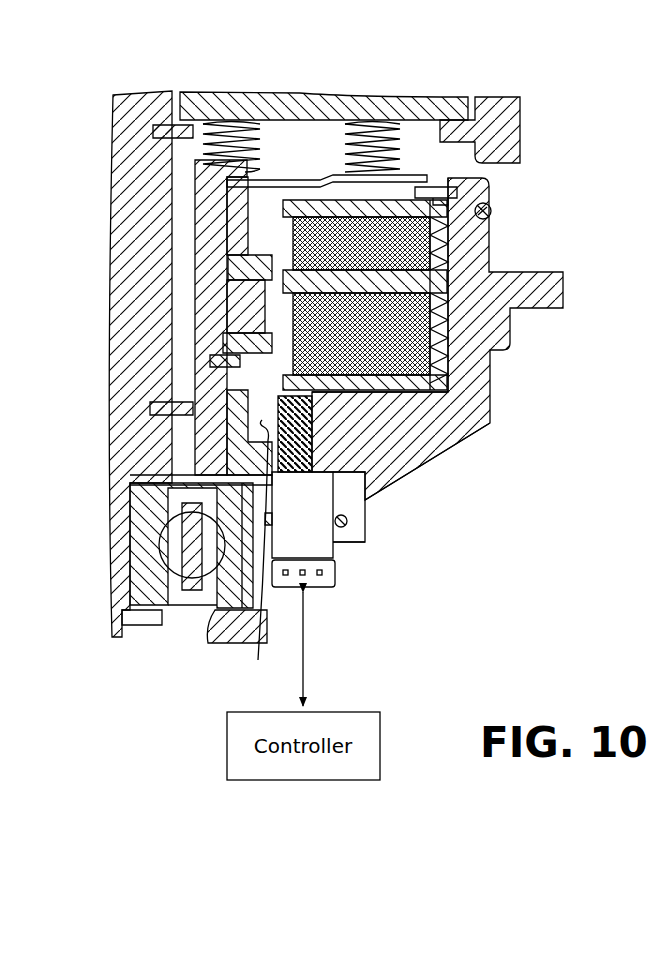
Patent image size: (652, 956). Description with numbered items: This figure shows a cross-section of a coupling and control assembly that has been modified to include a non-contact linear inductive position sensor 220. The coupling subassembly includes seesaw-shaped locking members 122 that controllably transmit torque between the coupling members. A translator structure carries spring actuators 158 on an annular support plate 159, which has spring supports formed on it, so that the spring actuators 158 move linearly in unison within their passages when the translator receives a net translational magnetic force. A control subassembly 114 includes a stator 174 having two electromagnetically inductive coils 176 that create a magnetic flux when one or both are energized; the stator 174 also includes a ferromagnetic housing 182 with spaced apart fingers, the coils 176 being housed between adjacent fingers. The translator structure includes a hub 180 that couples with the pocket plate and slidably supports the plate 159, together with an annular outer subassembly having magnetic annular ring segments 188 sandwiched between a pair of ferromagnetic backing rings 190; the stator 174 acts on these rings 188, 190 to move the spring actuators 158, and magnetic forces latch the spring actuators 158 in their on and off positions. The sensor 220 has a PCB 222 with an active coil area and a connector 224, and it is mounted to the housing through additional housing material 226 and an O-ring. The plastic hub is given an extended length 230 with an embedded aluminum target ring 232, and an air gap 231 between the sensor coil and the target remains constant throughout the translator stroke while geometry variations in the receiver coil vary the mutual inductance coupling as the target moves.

The control subassembly 114 is at (490, 428).
The locking members 122 is at (305, 93).
The spring actuators 158 is at (232, 128).
The annular support plate 159 is at (282, 178).
The stator 174 is at (457, 253).
The electromagnetically inductive coils 176 is at (410, 357).
The hub 180 is at (195, 330).
The ferromagnetic housing 182 is at (392, 400).
The magnetic annular ring segments 188 is at (205, 300).
The ferromagnetic backing rings 190 is at (225, 268).
The linear inductive position sensor 220 is at (366, 473).
The PCB 222 is at (320, 462).
The connector 224 is at (318, 590).
The additional housing material 226 is at (355, 545).
The extended length 230 is at (210, 455).
The air gap 231 is at (242, 555).
The embedded aluminum target ring 232 is at (245, 565).